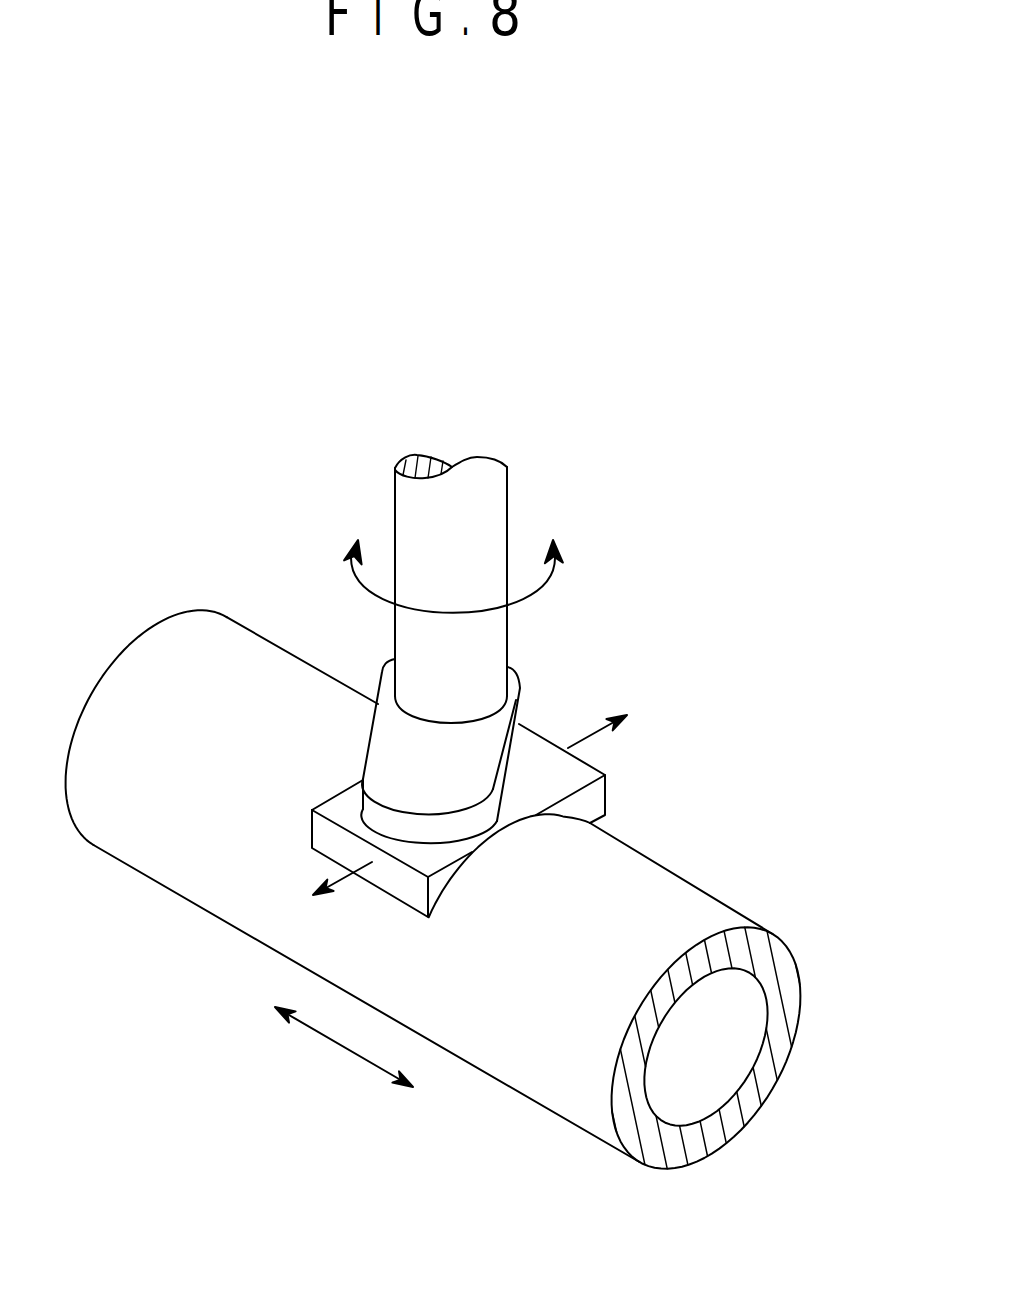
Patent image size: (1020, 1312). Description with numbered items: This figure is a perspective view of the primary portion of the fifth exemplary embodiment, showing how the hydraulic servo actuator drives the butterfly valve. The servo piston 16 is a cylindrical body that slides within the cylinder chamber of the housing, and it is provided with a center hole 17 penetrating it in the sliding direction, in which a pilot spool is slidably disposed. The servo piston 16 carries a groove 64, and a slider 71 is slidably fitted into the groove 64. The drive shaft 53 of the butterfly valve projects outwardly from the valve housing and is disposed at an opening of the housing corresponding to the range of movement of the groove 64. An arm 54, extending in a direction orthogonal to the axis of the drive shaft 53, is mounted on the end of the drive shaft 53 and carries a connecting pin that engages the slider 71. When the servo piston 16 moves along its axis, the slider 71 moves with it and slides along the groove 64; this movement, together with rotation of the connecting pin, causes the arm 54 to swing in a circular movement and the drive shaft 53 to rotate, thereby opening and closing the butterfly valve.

The servo piston 16 is at (523, 1073).
The center hole 17 is at (715, 1073).
The drive shaft 53 is at (490, 510).
The arm 54 is at (378, 738).
The groove 64 is at (442, 887).
The slider 71 is at (595, 798).